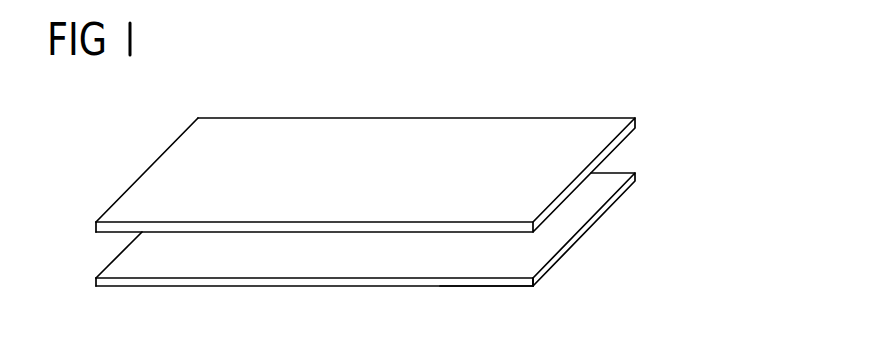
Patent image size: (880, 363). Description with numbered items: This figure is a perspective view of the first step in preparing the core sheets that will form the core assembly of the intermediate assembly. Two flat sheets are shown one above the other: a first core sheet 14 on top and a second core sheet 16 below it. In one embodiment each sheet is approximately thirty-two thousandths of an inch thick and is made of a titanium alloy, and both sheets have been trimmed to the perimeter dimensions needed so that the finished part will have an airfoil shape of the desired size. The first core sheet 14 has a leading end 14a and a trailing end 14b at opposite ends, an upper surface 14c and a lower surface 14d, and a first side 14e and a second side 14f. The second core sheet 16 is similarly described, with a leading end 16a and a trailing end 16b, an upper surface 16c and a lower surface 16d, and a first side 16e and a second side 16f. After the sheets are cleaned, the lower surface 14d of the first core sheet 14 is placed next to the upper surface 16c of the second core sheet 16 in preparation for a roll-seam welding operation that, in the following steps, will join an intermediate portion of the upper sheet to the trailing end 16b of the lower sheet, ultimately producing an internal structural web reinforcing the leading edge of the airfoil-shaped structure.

The first core sheet 14 is at (380, 140).
The leading end 14a is at (142, 176).
The trailing end 14b is at (636, 130).
The upper surface 14c is at (273, 135).
The lower surface 14d is at (110, 230).
The first side 14e is at (109, 231).
The second side 14f is at (382, 118).
The second core sheet 16 is at (380, 242).
The leading end 16a is at (117, 257).
The trailing end 16b is at (628, 186).
The upper surface 16c is at (277, 262).
The lower surface 16d is at (185, 287).
The first side 16e is at (521, 286).
The second side 16f is at (622, 172).